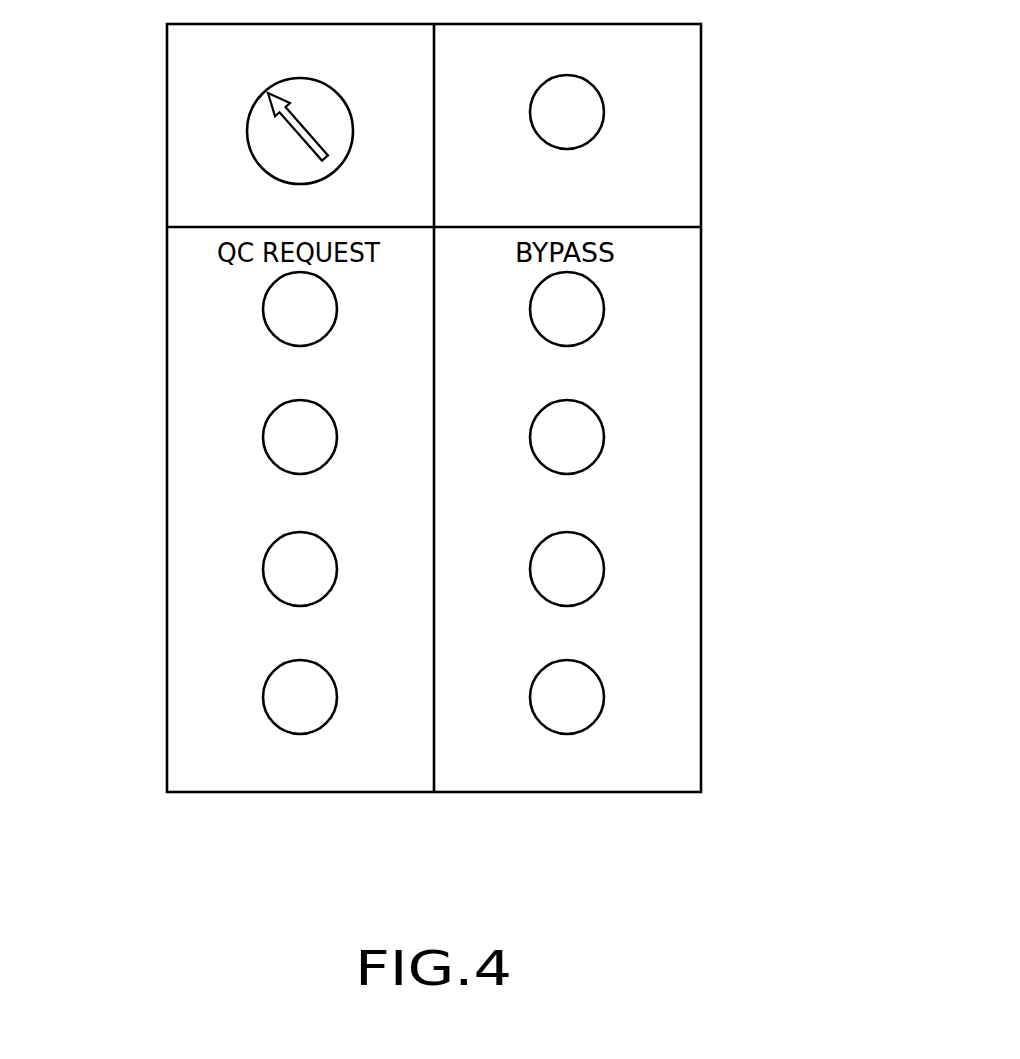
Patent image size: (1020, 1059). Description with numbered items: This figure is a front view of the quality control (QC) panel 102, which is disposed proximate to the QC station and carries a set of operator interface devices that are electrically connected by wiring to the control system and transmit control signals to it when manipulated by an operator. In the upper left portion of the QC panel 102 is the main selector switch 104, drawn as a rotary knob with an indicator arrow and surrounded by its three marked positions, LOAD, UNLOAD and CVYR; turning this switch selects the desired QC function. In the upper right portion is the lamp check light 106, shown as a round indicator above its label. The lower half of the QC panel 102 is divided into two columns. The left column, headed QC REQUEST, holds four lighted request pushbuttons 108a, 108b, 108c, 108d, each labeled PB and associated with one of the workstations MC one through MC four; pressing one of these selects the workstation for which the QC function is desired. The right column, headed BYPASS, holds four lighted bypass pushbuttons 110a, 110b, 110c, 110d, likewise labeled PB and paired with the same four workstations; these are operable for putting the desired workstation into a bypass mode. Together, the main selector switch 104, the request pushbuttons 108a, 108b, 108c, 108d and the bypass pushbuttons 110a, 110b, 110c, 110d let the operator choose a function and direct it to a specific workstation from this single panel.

The quality control panel 102 is at (543, 830).
The main selector switch 104 is at (255, 160).
The lamp check light 106 is at (607, 95).
The lighted request pushbutton 108a is at (263, 310).
The lighted request pushbutton 108b is at (263, 438).
The lighted request pushbutton 108c is at (263, 572).
The lighted request pushbutton 108d is at (263, 700).
The lighted bypass pushbutton 110a is at (607, 310).
The lighted bypass pushbutton 110b is at (607, 440).
The lighted bypass pushbutton 110c is at (607, 565).
The lighted bypass pushbutton 110d is at (607, 702).